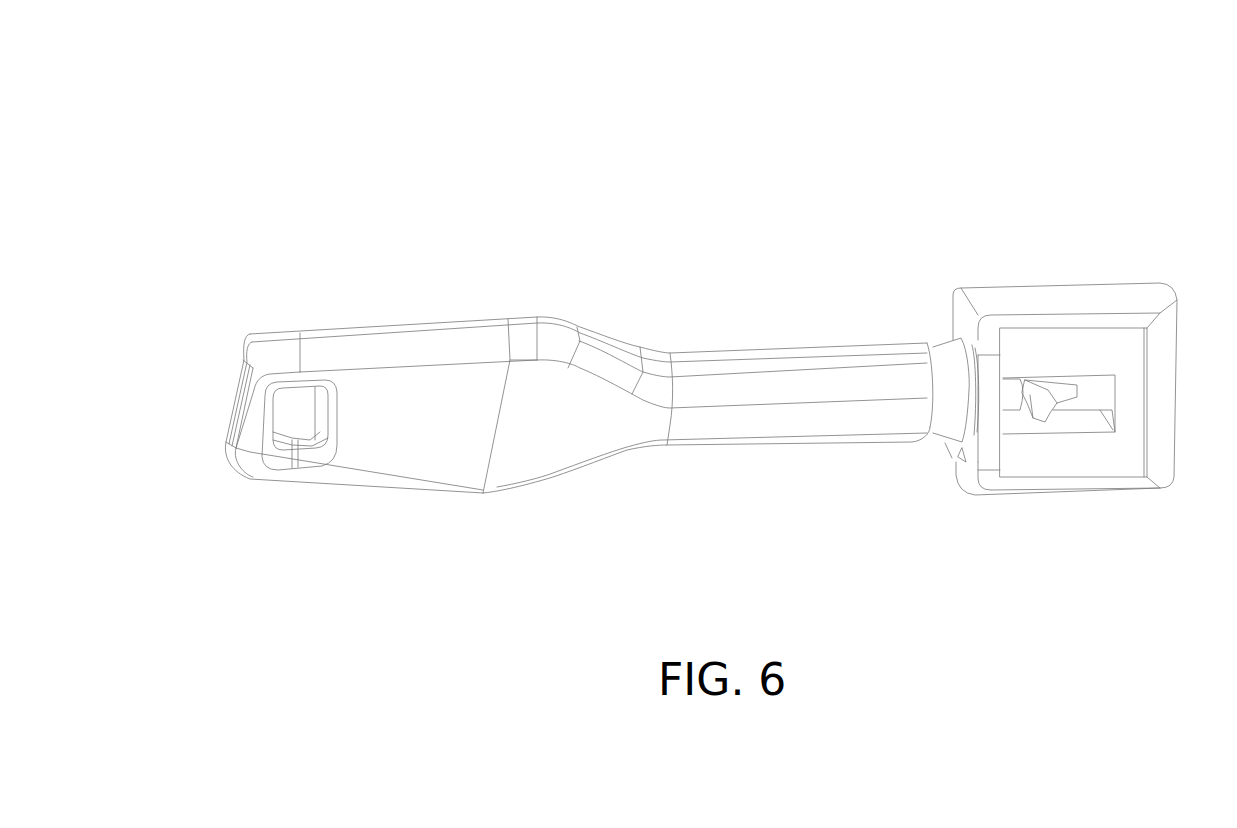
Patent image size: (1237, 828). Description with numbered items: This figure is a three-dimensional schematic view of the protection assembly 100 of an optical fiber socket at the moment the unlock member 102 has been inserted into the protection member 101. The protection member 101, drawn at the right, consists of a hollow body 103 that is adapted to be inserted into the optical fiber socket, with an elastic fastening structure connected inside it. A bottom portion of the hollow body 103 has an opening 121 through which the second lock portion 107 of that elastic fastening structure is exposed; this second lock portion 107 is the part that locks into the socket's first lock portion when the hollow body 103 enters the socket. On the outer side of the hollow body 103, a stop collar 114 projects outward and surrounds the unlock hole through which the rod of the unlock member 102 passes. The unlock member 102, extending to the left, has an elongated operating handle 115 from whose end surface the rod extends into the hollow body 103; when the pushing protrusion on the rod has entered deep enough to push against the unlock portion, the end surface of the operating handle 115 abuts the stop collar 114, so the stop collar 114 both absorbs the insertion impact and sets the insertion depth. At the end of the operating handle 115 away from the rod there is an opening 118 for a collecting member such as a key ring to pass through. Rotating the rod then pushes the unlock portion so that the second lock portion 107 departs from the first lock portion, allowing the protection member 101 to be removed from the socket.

The protection assembly 100 is at (401, 75).
The protection member 101 is at (970, 273).
The unlock member 102 is at (386, 309).
The hollow body 103 is at (1093, 352).
The second lock portion 107 is at (1047, 397).
The stop collar 114 is at (947, 360).
The operating handle 115 is at (542, 360).
The opening 118 is at (296, 420).
The opening 121 is at (1087, 433).